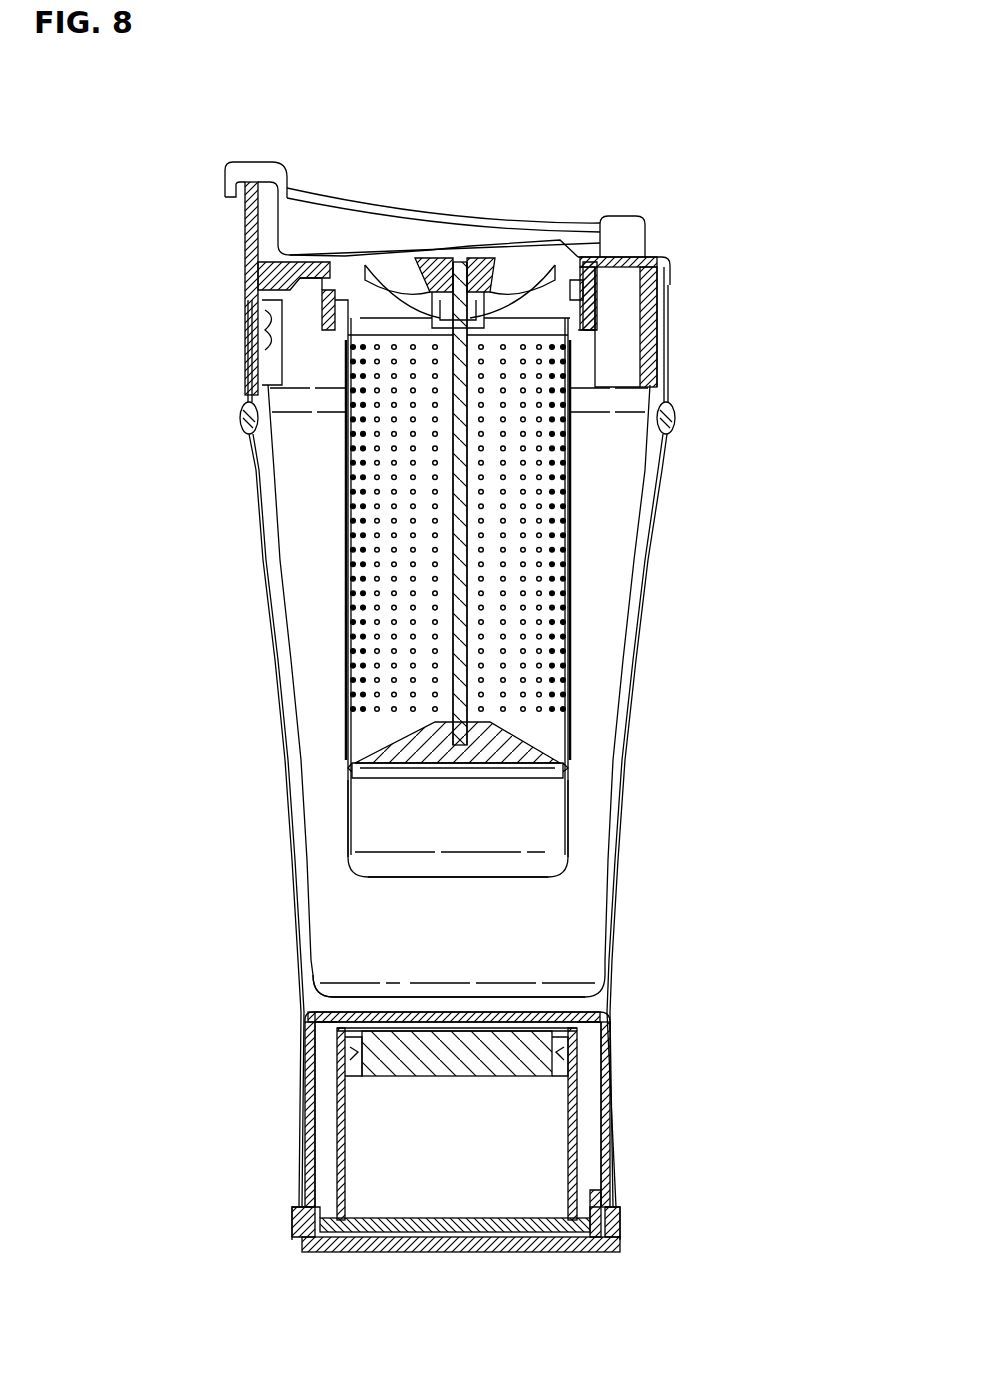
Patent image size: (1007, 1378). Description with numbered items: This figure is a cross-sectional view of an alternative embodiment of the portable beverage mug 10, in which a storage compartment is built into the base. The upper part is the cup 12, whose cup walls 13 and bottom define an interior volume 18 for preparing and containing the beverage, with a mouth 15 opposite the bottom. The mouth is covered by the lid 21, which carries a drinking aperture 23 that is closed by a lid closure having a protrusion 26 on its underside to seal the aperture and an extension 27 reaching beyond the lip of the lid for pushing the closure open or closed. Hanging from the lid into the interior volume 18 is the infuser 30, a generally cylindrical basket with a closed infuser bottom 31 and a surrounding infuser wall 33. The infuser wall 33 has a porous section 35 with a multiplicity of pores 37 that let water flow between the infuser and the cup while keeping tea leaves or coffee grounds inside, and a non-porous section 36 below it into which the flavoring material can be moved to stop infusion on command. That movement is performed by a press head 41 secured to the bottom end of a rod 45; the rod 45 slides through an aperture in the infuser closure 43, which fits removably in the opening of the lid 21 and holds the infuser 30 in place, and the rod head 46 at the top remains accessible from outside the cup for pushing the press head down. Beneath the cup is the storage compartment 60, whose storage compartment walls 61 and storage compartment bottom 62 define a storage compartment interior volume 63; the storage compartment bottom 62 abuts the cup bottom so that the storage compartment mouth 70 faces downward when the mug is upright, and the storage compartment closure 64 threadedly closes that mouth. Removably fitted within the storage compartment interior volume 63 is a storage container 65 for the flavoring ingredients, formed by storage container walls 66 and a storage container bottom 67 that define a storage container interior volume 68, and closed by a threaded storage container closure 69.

The portable beverage mug 10 is at (672, 130).
The cup 12 is at (270, 537).
The cup walls 13 is at (262, 556).
The mouth 15 is at (680, 352).
The interior volume 18 is at (560, 957).
The lid 21 is at (668, 282).
The drinking aperture 23 is at (300, 312).
The protrusion 26 is at (285, 292).
The extension 27 is at (250, 160).
The infuser 30 is at (523, 567).
The closed infuser bottom 31 is at (490, 877).
The infuser wall 33 is at (578, 638).
The porous section 35 is at (546, 712).
The non-porous section 36 is at (545, 807).
The pores 37 is at (483, 535).
The press head 41 is at (403, 745).
The infuser closure 43 is at (533, 262).
The rod 45 is at (453, 603).
The rod head 46 is at (465, 258).
The storage compartment 60 is at (610, 1145).
The storage compartment walls 61 is at (604, 1052).
The storage compartment bottom 62 is at (600, 1025).
The storage compartment interior volume 63 is at (590, 1090).
The storage compartment closure 64 is at (583, 1220).
The storage container 65 is at (333, 1133).
The storage container walls 66 is at (333, 1170).
The storage container bottom 67 is at (397, 1228).
The storage container interior volume 68 is at (385, 1190).
The storage container closure 69 is at (400, 1047).
The storage compartment mouth 70 is at (608, 1222).